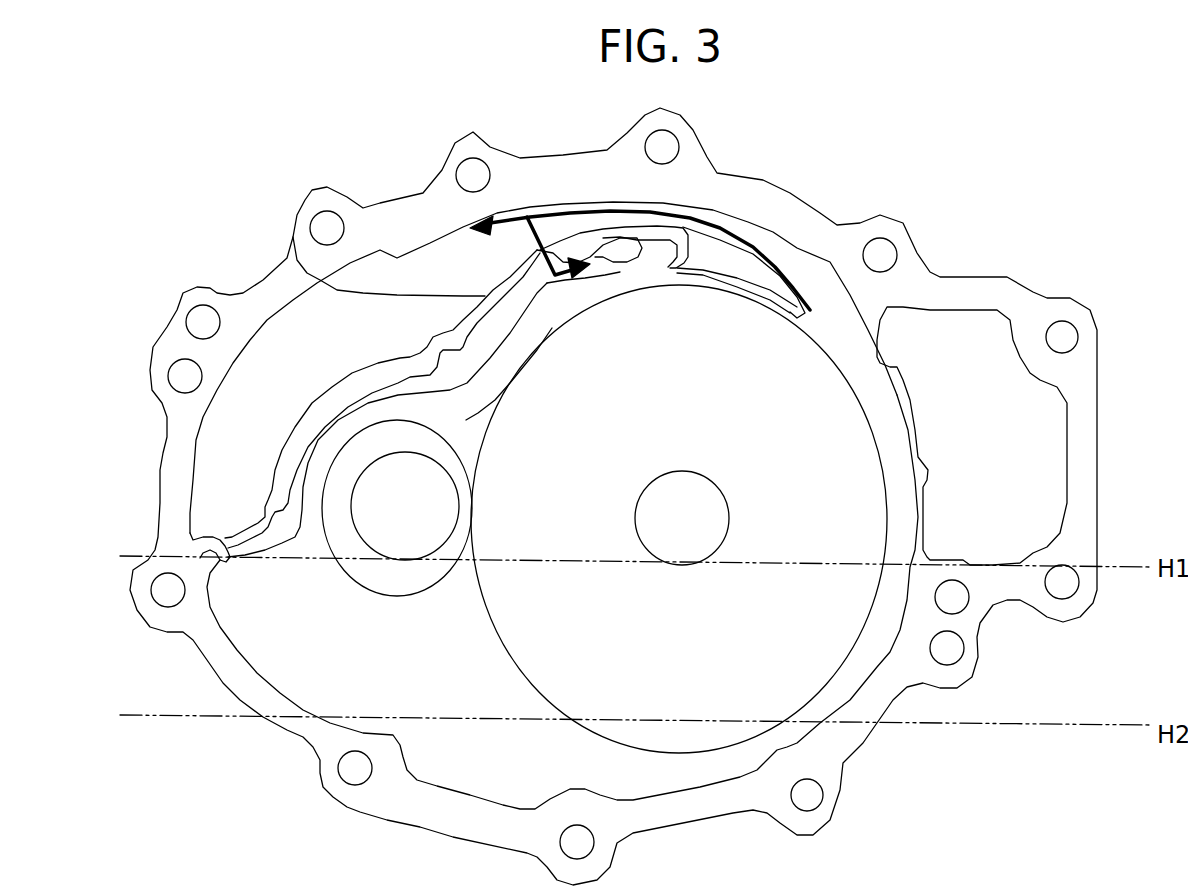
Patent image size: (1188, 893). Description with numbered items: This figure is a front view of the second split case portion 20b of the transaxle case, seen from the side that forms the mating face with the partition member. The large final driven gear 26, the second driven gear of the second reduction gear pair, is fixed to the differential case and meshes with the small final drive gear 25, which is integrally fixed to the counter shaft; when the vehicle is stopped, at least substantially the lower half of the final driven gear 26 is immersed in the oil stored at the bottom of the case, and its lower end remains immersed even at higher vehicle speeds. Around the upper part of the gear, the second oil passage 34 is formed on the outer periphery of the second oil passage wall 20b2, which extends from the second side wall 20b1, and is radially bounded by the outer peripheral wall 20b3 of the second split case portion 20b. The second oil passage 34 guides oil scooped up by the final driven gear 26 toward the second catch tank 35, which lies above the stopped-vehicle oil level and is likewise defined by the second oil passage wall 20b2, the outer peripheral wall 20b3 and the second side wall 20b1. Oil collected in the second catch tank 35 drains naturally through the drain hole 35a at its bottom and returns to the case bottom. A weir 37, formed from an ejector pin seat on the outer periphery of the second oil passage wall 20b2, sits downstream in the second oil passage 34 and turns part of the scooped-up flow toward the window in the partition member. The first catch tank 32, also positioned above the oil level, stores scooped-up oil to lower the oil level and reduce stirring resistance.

The second split case portion 20b is at (754, 168).
The second side wall 20b1 is at (562, 640).
The second oil passage wall 20b2 is at (614, 179).
The outer peripheral wall 20b3 is at (388, 250).
The final drive gear 25 is at (371, 622).
The final driven gear 26 is at (679, 585).
The first catch tank 32 is at (972, 378).
The second oil passage 34 is at (543, 320).
The second catch tank 35 is at (383, 387).
The drain hole 35a is at (226, 655).
The weir 37 is at (382, 360).